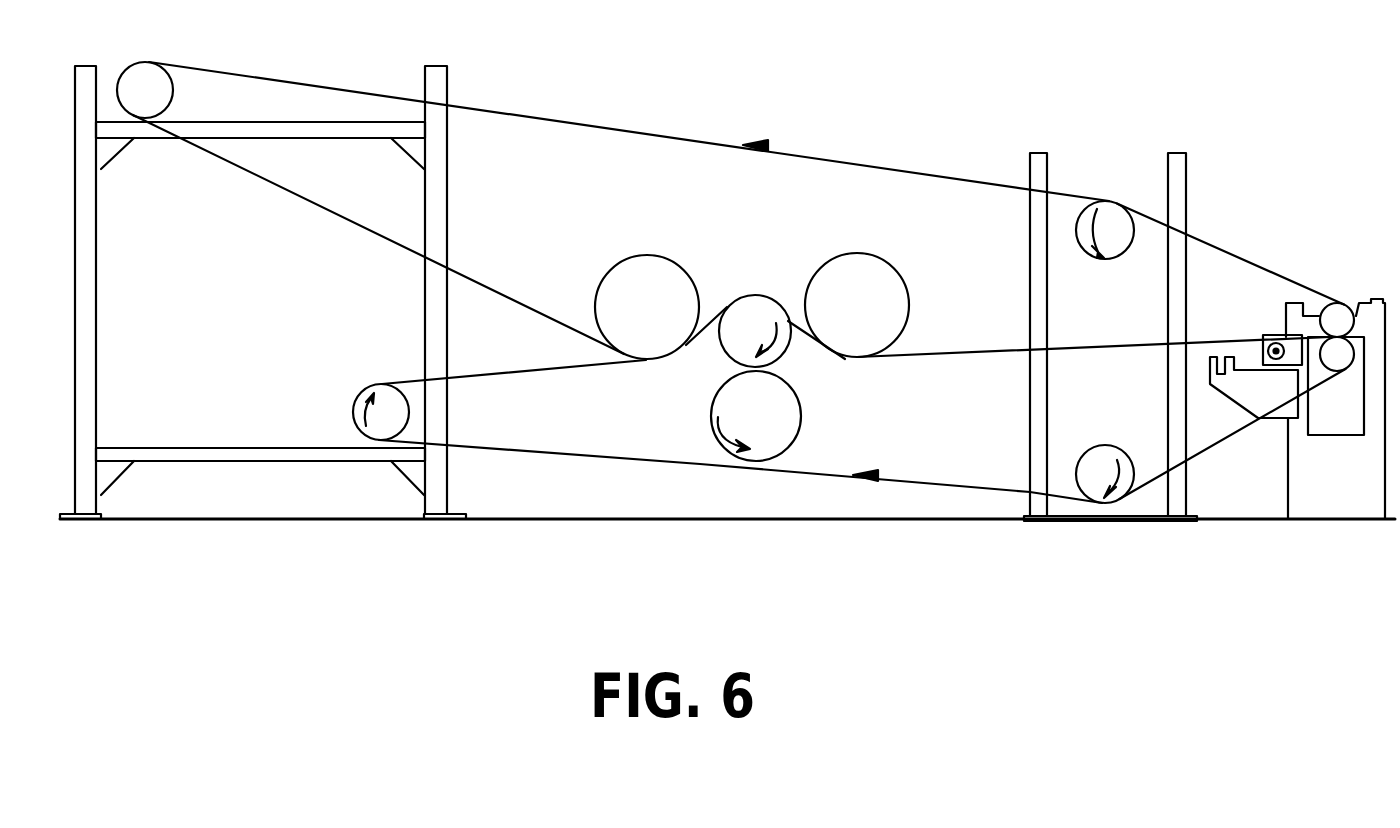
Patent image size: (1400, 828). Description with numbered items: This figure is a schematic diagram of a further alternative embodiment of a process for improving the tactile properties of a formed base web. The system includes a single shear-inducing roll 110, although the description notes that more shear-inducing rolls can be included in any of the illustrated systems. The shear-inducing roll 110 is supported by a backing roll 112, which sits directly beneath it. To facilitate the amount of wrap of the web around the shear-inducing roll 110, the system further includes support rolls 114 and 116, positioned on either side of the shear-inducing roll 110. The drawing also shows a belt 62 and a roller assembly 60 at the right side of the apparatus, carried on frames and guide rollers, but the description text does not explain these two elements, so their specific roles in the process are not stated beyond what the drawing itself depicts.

The nip roller assembly 60 is at (1269, 269).
The conveyor belt 62 is at (937, 483).
The shear-inducing roll 110 is at (754, 307).
The backing roll 112 is at (790, 413).
The support roll 114 is at (632, 268).
The support roll 116 is at (882, 282).